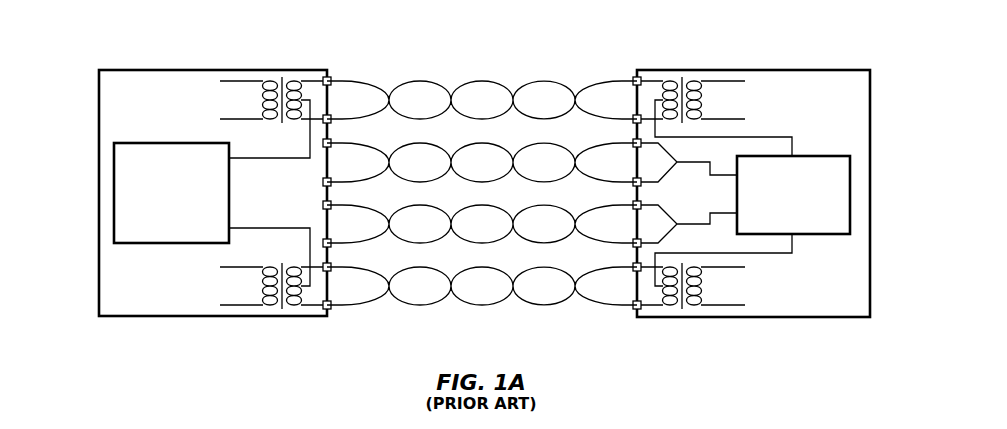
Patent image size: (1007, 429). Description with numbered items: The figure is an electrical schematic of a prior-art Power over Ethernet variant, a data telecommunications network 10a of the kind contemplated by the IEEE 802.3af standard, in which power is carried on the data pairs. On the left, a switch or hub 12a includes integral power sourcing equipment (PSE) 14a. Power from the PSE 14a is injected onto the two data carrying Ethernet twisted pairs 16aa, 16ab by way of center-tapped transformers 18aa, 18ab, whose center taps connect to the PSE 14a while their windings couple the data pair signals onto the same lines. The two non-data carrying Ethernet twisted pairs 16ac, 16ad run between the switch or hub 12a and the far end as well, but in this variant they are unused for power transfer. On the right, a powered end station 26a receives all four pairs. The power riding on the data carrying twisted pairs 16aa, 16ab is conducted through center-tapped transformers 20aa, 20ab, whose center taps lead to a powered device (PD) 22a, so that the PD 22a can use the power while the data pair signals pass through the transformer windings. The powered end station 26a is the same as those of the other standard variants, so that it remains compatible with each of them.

The data telecommunications network 10a is at (494, 176).
The switch or hub 12a is at (284, 70).
The power sourcing equipment (PSE) 14a is at (113, 191).
The data carrying Ethernet twisted pair 16aa is at (420, 81).
The data carrying Ethernet twisted pair 16ab is at (420, 267).
The non-data carrying Ethernet twisted pair 16ac is at (420, 143).
The non-data carrying Ethernet twisted pair 16ad is at (420, 205).
The center-tapped transformer 18aa is at (294, 74).
The center-tapped transformer 18ab is at (295, 309).
The center-tapped transformer 20aa is at (670, 78).
The center-tapped transformer 20ab is at (668, 307).
The powered device (PD) 22a is at (850, 195).
The powered end station 26a is at (870, 292).